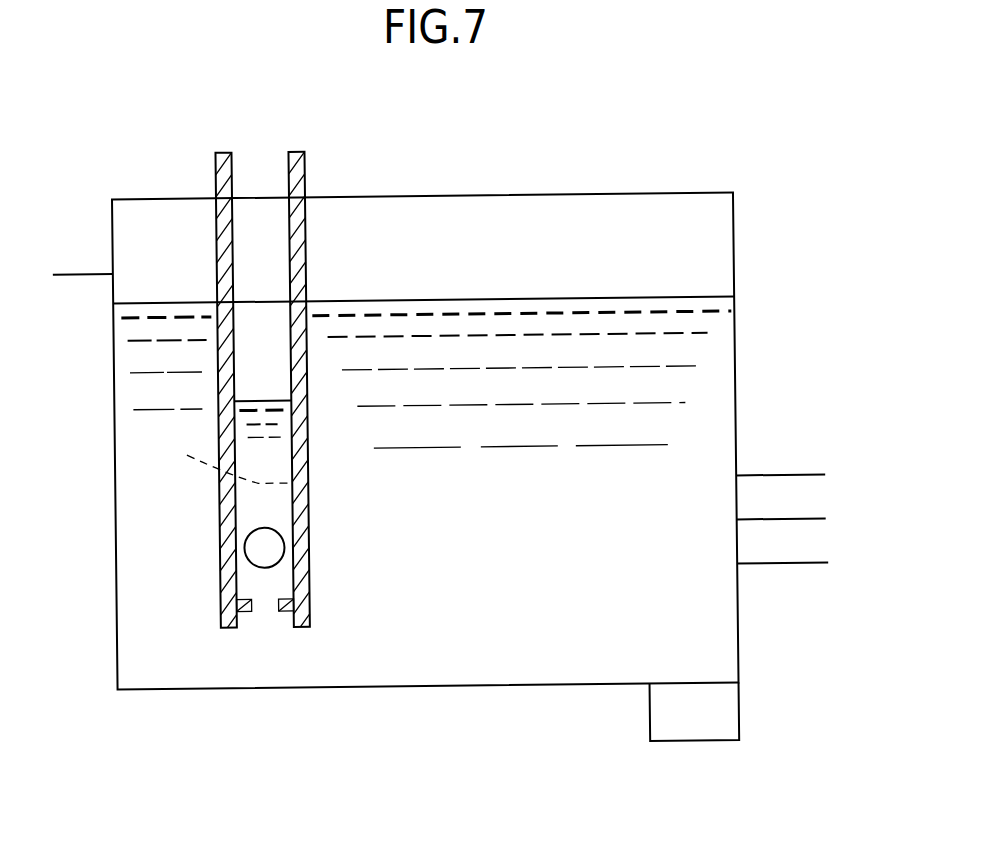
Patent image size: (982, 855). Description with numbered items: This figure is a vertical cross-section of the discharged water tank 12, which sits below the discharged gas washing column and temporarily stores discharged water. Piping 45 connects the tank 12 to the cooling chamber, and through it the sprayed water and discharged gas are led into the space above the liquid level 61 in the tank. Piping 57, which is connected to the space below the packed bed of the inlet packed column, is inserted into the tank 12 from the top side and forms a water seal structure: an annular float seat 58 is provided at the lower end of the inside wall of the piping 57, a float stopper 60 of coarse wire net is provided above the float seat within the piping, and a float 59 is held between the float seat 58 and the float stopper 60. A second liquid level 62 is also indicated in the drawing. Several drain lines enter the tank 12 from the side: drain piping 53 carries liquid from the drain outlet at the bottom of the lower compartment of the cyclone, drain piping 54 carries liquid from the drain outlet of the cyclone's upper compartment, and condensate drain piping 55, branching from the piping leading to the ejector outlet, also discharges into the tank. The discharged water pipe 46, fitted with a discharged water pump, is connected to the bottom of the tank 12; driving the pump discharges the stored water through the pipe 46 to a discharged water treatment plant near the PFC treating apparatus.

The discharged water tank 12 is at (733, 349).
The piping 45 is at (60, 274).
The discharged water pipe 46 is at (699, 747).
The drain piping 53 is at (800, 482).
The drain piping 54 is at (810, 526).
The condensate drain piping 55 is at (798, 570).
The piping 57 is at (305, 160).
The float seat 58 is at (242, 613).
The float 59 is at (280, 550).
The float stopper 60 is at (219, 461).
The liquid level 61 is at (608, 303).
The liquid level 62 is at (259, 402).